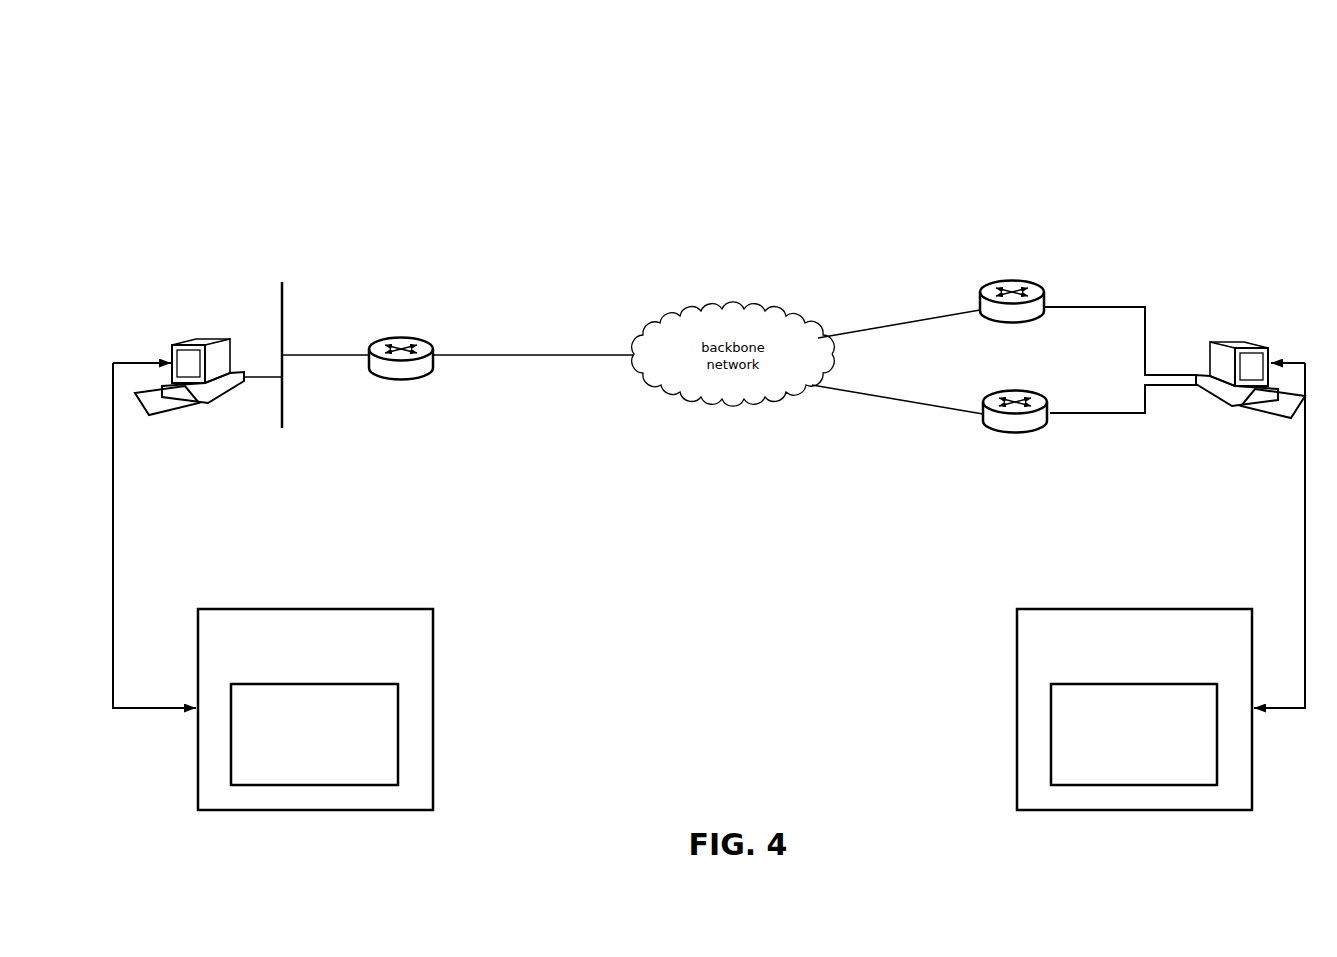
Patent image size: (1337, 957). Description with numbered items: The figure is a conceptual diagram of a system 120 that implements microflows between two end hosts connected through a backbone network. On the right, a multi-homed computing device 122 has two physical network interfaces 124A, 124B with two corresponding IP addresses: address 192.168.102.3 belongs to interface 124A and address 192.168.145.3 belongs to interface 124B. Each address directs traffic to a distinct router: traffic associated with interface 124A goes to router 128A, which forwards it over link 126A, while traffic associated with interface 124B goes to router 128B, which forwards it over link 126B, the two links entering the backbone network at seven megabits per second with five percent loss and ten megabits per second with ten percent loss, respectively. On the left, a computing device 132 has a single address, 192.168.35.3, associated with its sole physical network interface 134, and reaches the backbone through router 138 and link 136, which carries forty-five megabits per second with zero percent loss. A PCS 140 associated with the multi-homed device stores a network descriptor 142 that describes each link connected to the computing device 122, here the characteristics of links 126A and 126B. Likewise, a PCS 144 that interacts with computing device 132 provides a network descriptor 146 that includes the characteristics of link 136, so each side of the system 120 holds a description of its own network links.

The system 120 is at (1160, 100).
The multi-homed computing device 122 is at (1226, 344).
The physical network interface 124A is at (1201, 364).
The physical network interface 124B is at (1201, 399).
The link 126A is at (957, 313).
The link 126B is at (957, 410).
The router 128A is at (1023, 281).
The router 128B is at (997, 434).
The computing device 132 is at (226, 344).
The physical network interface 134 is at (244, 368).
The link 136 is at (532, 355).
The router 138 is at (401, 337).
The PCS 140 is at (1116, 667).
The network descriptor 142 is at (1116, 774).
The PCS 144 is at (297, 667).
The network descriptor 146 is at (297, 774).